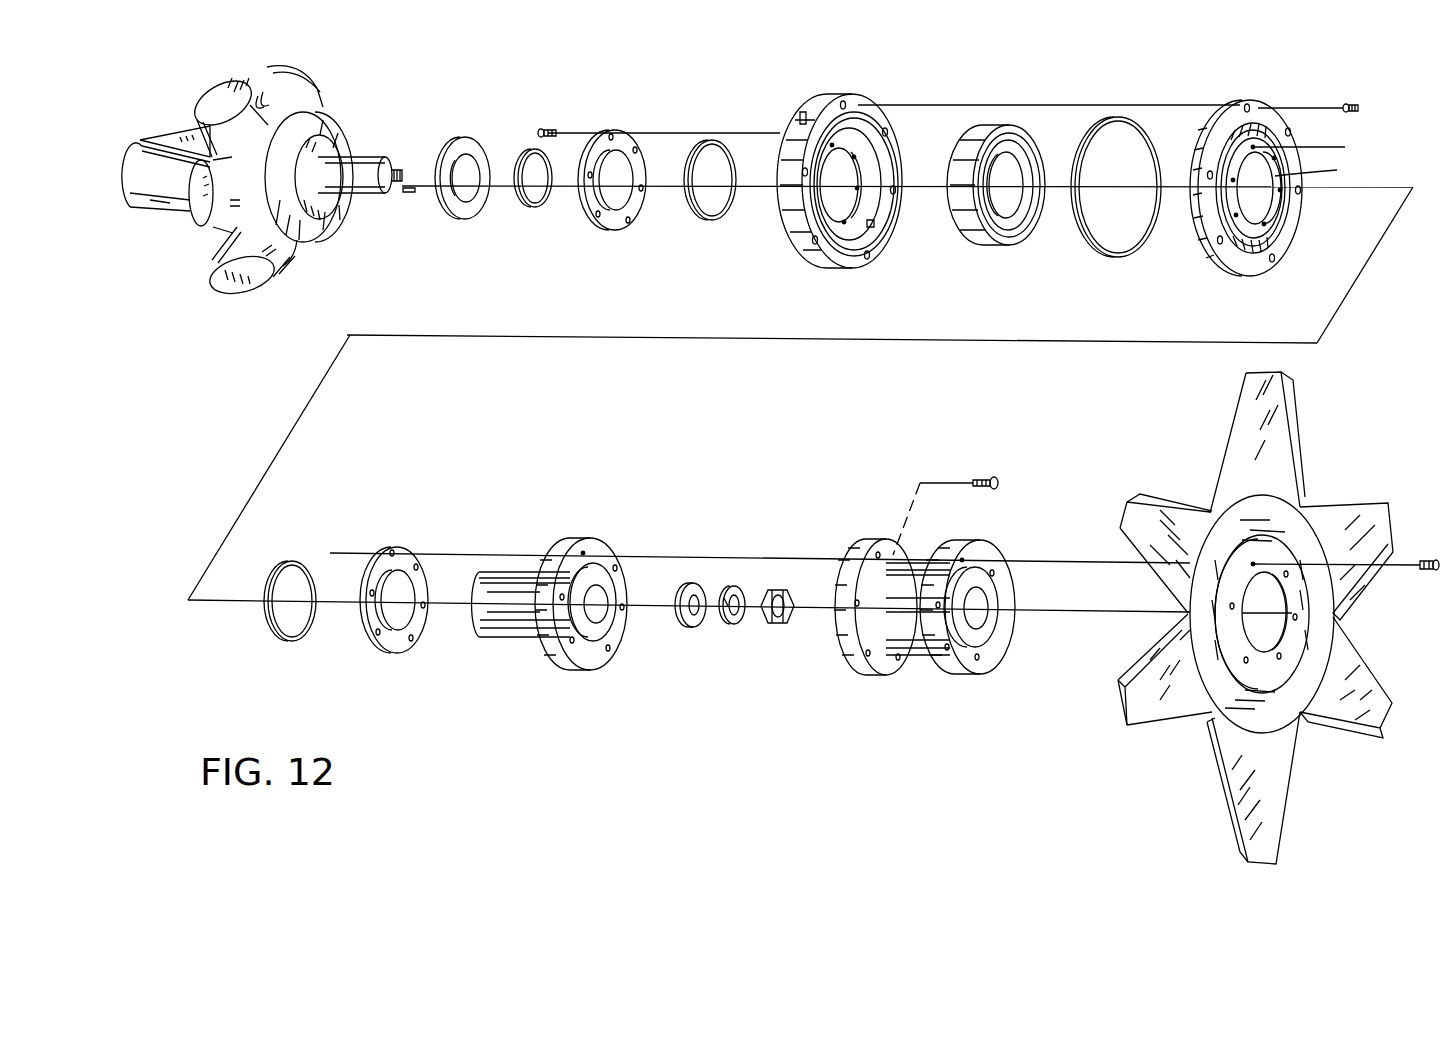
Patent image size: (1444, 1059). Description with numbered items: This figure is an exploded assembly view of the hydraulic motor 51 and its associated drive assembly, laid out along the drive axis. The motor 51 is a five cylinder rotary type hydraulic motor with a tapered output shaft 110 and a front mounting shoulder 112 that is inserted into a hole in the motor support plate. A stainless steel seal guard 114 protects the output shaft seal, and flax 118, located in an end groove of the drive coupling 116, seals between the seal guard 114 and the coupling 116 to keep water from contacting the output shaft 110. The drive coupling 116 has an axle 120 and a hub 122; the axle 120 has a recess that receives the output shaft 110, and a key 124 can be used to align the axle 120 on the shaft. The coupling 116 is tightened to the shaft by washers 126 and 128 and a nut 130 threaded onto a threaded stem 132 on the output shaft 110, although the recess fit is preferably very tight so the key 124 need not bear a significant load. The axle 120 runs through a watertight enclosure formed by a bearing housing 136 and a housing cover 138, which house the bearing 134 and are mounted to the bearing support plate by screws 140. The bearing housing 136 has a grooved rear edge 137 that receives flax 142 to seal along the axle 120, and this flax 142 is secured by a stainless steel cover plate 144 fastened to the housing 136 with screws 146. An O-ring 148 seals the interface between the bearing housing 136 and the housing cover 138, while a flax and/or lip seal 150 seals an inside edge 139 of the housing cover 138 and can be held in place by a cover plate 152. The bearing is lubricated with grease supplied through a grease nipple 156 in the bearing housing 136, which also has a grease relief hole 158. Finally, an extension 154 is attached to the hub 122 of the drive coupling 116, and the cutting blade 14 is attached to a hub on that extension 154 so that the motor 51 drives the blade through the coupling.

The hydraulic motor 51 is at (150, 165).
The front mounting shoulder 112 is at (326, 127).
The tapered output shaft 110 is at (352, 168).
The threaded stem 132 is at (396, 168).
The key 124 is at (409, 200).
The seal guard 114 is at (466, 143).
The screws 146 is at (546, 131).
The flax 118 is at (535, 208).
The cover plate 144 is at (615, 228).
The flax 142 is at (712, 222).
The bearing housing 136 is at (832, 170).
The grooved rear edge 137 is at (797, 235).
The grease nipple 156 is at (803, 116).
The grease relief hole 158 is at (874, 226).
The bearing 134 is at (1005, 244).
The O-ring 148 is at (1118, 120).
The housing cover 138 is at (1262, 104).
The inside edge 139 is at (1325, 170).
The screws 140 is at (1350, 106).
The flax and/or lip seal 150 is at (290, 642).
The cover plate 152 is at (397, 650).
The axle 120 is at (503, 568).
The drive coupling 116 is at (521, 602).
The hub 122 is at (566, 594).
The washer 126 is at (693, 628).
The washer 128 is at (733, 626).
The nut 130 is at (780, 625).
The extension 154 is at (967, 674).
The cutting blade 14 is at (1275, 852).